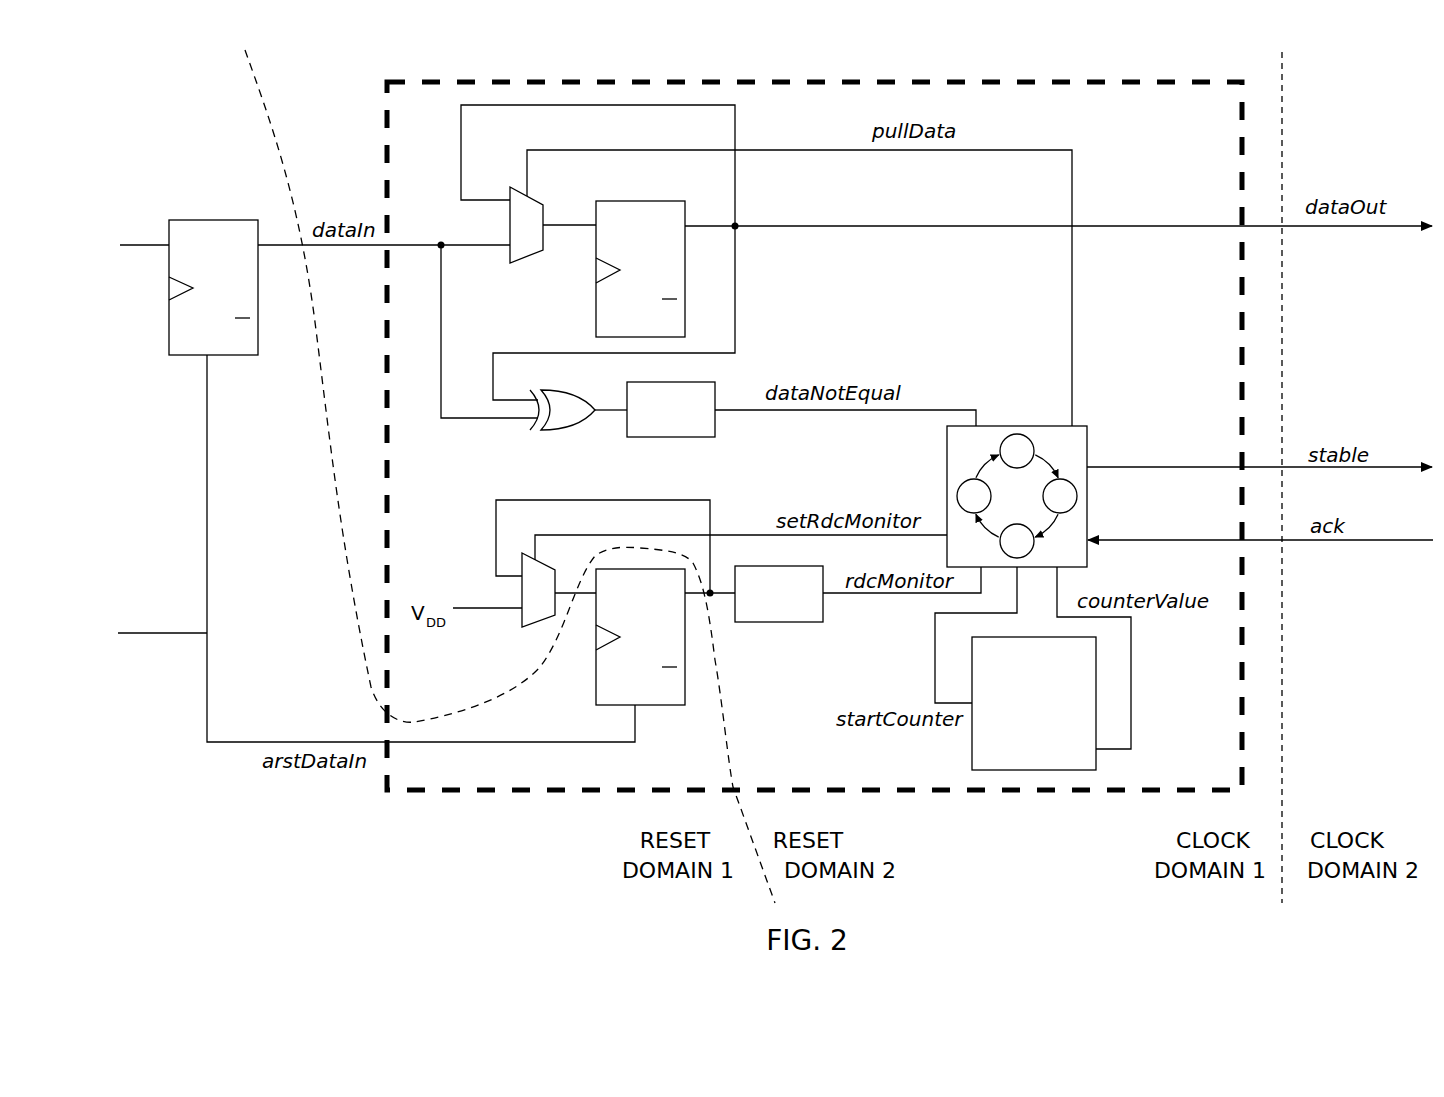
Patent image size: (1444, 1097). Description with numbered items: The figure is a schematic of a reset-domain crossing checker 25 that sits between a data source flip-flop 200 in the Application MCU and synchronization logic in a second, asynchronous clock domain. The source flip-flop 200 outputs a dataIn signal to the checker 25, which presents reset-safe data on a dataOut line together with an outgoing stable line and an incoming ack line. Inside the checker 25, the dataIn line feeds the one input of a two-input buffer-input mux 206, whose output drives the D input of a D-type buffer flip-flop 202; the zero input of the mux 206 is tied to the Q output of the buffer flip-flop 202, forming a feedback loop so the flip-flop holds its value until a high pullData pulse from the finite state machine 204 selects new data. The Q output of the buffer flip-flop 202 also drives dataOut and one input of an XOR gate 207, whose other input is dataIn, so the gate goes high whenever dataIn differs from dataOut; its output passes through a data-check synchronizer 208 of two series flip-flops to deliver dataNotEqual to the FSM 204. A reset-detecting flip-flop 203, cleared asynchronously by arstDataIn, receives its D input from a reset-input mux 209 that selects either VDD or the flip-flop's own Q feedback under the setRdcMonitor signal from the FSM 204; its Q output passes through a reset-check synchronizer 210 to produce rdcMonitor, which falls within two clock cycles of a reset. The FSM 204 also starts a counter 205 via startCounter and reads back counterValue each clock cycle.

The RDC checker 25 is at (384, 122).
The data source flip-flop 200 is at (169, 333).
The buffer flip-flop 202 is at (596, 308).
The reset-detecting flip-flop 203 is at (672, 707).
The finite state machine 204 is at (1031, 426).
The counter 205 is at (972, 742).
The buffer-input mux 206 is at (516, 265).
The XOR gate 207 is at (548, 432).
The data-check synchronizer 208 is at (677, 439).
The reset-input mux 209 is at (528, 630).
The reset-check synchronizer 210 is at (797, 624).